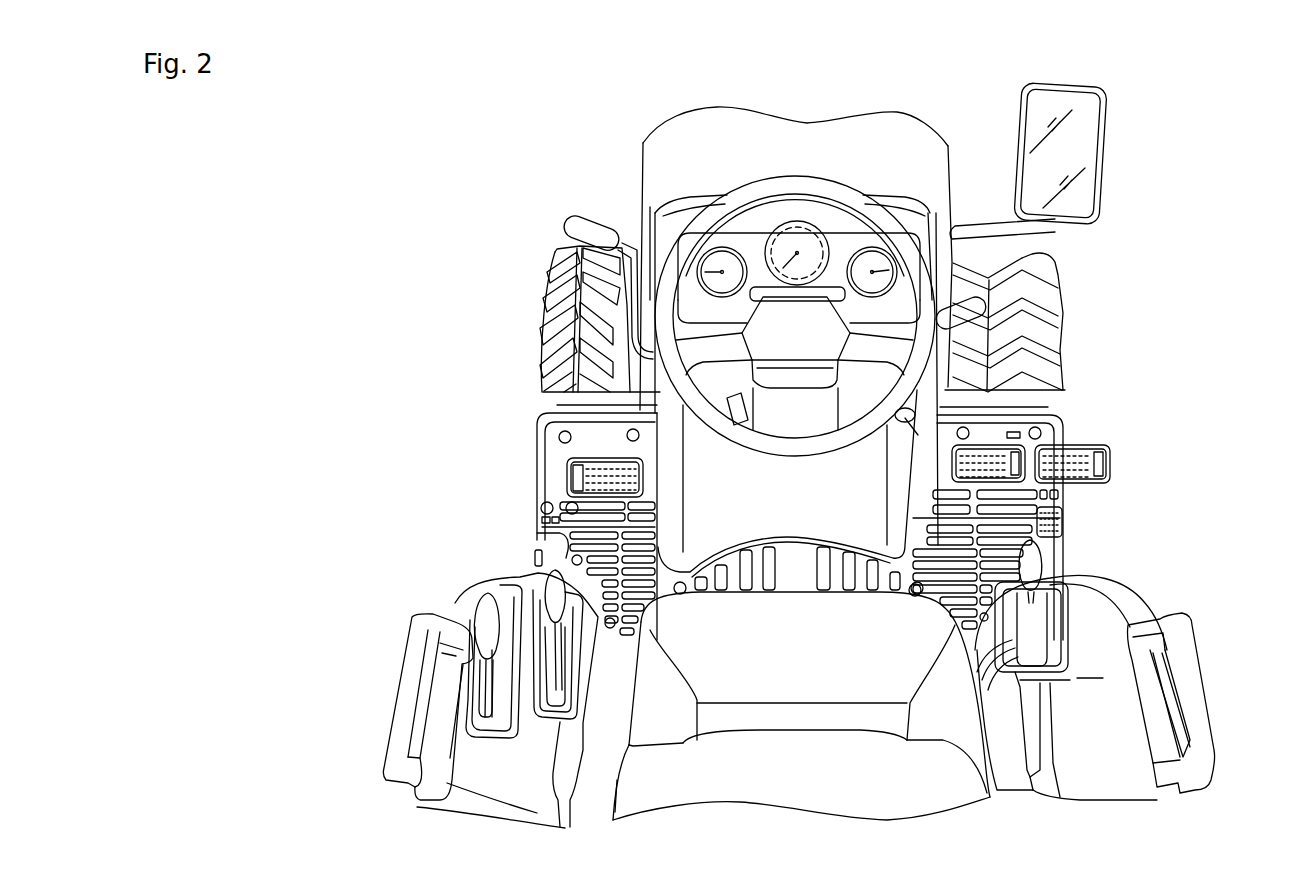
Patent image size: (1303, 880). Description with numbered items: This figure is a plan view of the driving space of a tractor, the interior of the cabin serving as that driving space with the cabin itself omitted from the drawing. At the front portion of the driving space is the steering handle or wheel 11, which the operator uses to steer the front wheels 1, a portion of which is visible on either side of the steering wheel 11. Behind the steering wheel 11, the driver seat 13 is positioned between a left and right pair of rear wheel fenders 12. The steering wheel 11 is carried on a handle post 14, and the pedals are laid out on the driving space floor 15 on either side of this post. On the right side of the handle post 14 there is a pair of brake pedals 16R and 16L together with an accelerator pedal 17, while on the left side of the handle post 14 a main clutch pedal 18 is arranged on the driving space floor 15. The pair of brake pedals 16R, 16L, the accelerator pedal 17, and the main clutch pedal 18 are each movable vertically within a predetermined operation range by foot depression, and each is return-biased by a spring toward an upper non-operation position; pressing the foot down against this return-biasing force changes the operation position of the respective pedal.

The front wheels 1 is at (553, 257).
The steering wheel 11 is at (797, 180).
The rear wheel fenders 12 is at (477, 763).
The driver seat 13 is at (633, 798).
The handle post 14 is at (806, 520).
The driving space floor 15 is at (536, 553).
The brake pedal 16L is at (987, 442).
The brake pedal 16R is at (1090, 443).
The accelerator pedal 17 is at (1060, 527).
The main clutch pedal 18 is at (563, 470).